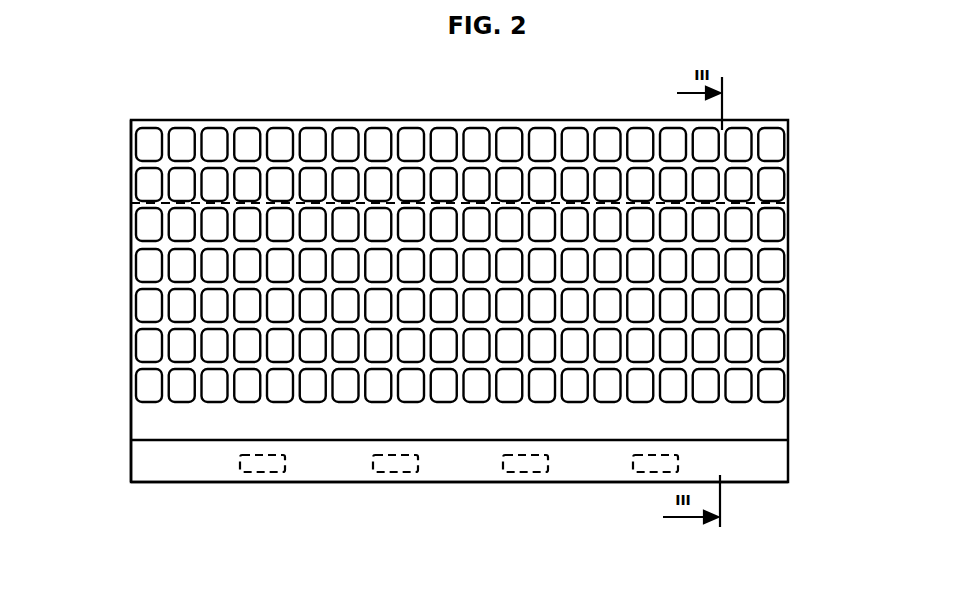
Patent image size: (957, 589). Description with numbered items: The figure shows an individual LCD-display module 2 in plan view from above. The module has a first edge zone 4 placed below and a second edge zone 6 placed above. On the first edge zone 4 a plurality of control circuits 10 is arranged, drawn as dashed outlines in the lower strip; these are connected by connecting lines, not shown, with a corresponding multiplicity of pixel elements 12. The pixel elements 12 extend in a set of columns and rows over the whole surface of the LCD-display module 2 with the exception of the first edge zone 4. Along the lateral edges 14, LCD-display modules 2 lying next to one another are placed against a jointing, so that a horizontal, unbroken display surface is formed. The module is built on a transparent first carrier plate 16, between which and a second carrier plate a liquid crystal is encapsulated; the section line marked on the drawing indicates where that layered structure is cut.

The LCD-display module 2 is at (826, 229).
The first edge zone 4 is at (760, 458).
The second edge zone 6 is at (755, 157).
The control circuits 10 is at (655, 463).
The pixel elements 12 is at (438, 140).
The lateral edges 14 is at (132, 362).
The first carrier plate 16 is at (770, 419).